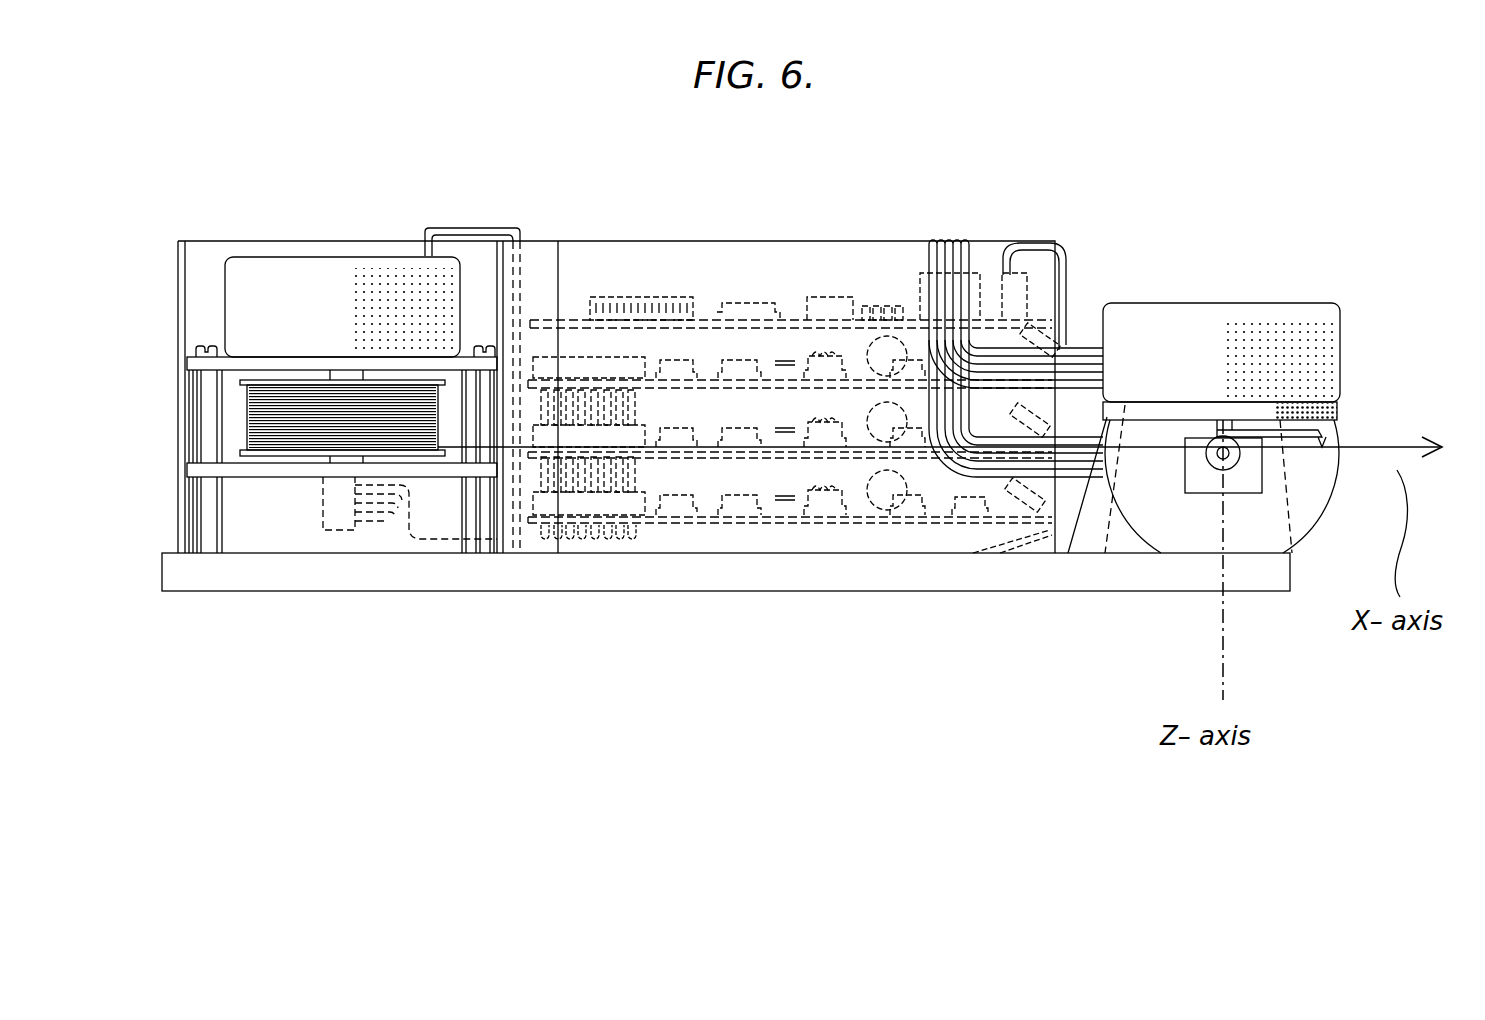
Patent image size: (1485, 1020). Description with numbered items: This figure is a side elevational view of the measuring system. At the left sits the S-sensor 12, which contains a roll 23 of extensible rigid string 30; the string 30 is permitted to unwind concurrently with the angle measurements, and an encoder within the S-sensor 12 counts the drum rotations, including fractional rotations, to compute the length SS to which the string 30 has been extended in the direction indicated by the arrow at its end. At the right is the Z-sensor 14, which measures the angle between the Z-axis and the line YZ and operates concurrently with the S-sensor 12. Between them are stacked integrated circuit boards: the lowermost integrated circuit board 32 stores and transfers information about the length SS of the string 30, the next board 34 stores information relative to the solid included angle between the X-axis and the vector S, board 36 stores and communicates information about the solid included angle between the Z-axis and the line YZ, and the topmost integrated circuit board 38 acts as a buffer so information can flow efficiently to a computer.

The S-sensor 12 is at (278, 287).
The Z-sensor 14 is at (1140, 337).
The roll 23 is at (258, 413).
The extensible rigid string 30 is at (1393, 439).
The lowermost integrated circuit board 32 is at (833, 528).
The board 34 is at (707, 467).
The board 36 is at (678, 393).
The topmost integrated circuit board 38 is at (714, 300).